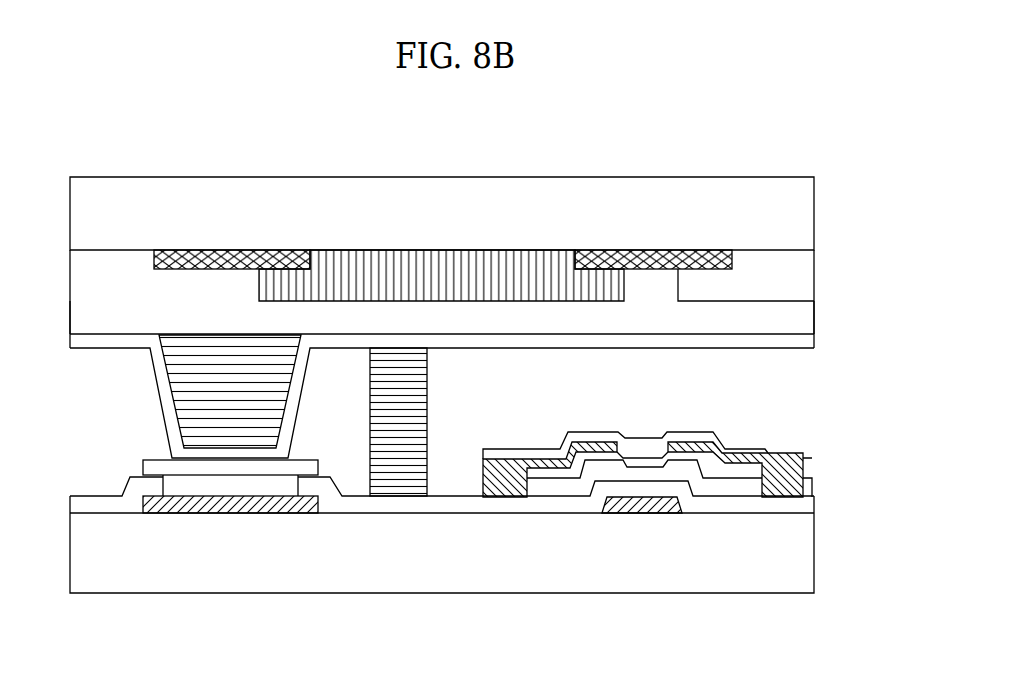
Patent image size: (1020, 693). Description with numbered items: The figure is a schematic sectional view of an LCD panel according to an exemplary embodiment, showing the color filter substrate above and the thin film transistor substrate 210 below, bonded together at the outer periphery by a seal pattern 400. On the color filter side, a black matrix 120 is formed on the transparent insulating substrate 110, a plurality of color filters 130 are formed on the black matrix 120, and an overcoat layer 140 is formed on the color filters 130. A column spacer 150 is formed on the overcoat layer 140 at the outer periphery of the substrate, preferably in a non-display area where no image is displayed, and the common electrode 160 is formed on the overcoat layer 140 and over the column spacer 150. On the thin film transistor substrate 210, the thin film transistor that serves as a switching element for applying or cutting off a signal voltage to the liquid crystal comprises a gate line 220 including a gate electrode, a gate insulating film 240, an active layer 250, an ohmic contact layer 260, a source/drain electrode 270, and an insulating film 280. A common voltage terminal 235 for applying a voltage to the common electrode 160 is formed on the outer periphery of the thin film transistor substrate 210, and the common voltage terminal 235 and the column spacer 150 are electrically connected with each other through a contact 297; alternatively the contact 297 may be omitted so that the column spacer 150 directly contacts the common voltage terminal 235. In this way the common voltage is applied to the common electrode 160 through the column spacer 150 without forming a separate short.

The transparent insulating substrate 110 is at (802, 218).
The black matrix 120 is at (660, 250).
The color filters 130 is at (802, 273).
The overcoat layer 140 is at (802, 318).
The column spacer 150 is at (188, 380).
The common electrode 160 is at (802, 346).
The thin film transistor substrate 210 is at (802, 555).
The gate line 220 is at (647, 513).
The common voltage terminal 235 is at (153, 504).
The gate insulating film 240 is at (805, 507).
The active layer 250 is at (749, 486).
The ohmic contact layer 260 is at (737, 472).
The source/drain electrode 270 is at (812, 474).
The insulating film 280 is at (527, 458).
The contact 297 is at (155, 468).
The seal pattern 400 is at (400, 484).